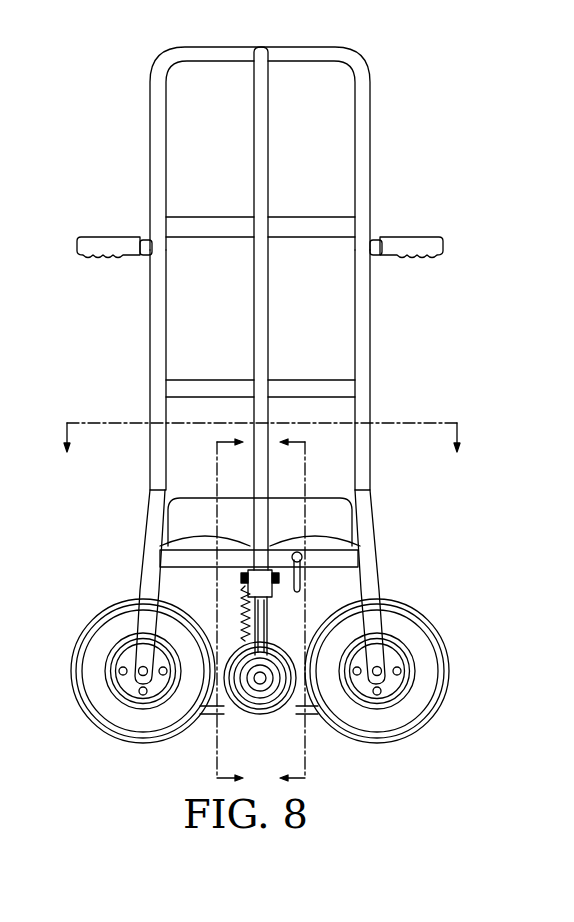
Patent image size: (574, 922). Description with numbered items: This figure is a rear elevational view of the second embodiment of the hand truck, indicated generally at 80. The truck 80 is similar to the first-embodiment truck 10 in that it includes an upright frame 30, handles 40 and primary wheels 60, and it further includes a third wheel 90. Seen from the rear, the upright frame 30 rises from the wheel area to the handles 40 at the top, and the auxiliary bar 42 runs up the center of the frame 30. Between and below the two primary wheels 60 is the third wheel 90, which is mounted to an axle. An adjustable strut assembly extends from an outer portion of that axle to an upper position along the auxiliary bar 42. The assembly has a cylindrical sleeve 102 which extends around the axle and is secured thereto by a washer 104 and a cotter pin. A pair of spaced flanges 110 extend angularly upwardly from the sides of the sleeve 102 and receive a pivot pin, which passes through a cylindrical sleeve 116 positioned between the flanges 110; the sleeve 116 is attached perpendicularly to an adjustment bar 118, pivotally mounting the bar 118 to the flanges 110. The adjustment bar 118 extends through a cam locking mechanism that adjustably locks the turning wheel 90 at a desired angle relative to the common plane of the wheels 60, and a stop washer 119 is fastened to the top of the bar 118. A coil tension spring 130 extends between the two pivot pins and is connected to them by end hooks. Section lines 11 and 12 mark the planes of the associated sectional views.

The hand truck 80 is at (385, 95).
The upright frame 30 is at (372, 317).
The handles 40 is at (122, 236).
The auxiliary bar 42 is at (262, 312).
The hand truck 10 is at (260, 453).
The section line 11 is at (214, 613).
The section line 12 is at (311, 612).
The adjustment bar 118 is at (182, 543).
The stop washer 119 is at (295, 540).
The coil tension spring 130 is at (247, 612).
The cylindrical sleeve 116 is at (278, 604).
The spaced flanges 110 is at (274, 650).
The third wheel 90 is at (258, 718).
The cylindrical sleeve 102 is at (256, 712).
The washer 104 is at (291, 700).
The primary wheels 60 is at (76, 640).